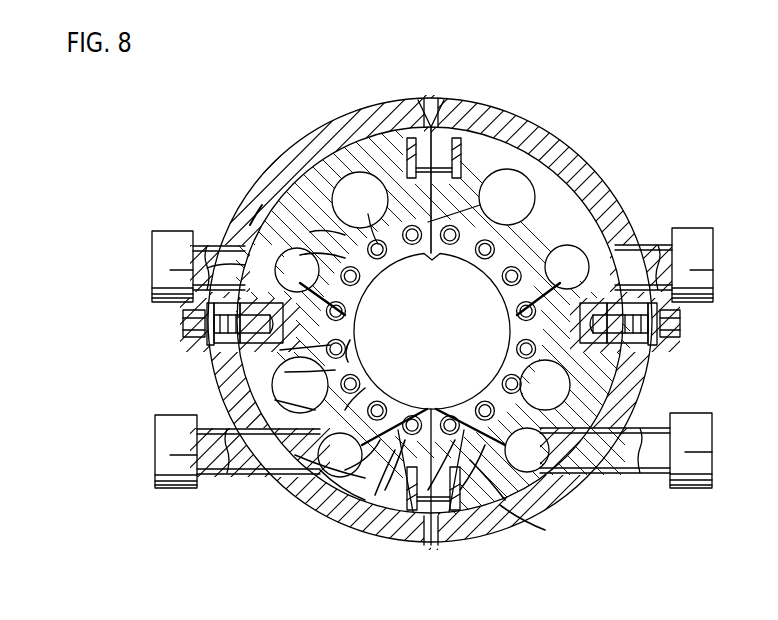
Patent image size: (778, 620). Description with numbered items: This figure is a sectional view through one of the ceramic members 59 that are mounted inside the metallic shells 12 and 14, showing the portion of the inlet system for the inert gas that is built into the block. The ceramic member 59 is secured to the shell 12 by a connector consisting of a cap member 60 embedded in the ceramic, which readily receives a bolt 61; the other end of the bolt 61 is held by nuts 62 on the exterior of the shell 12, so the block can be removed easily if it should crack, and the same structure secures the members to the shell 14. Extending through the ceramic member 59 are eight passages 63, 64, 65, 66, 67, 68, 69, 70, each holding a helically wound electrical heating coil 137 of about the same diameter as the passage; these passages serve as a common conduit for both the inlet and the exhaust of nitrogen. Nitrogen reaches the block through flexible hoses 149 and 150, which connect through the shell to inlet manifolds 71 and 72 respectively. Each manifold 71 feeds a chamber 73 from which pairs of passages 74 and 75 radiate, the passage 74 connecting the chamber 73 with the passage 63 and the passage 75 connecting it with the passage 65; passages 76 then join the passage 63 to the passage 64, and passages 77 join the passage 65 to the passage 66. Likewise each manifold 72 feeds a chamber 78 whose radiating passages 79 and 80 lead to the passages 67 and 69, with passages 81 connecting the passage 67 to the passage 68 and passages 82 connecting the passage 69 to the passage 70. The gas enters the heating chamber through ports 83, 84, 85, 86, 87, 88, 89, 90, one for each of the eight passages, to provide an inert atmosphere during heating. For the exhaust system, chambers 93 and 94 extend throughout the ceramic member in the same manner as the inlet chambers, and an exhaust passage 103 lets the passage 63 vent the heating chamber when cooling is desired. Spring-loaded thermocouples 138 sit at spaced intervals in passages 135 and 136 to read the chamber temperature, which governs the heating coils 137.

The metallic shell 12 is at (392, 98).
The metallic shell 14 is at (522, 118).
The ceramic member 59 is at (434, 128).
The cap member 60 is at (240, 345).
The bolt 61 is at (150, 330).
The nuts 62 is at (183, 335).
The passage 63 is at (500, 505).
The passage 64 is at (375, 495).
The passage 65 is at (350, 353).
The passage 66 is at (275, 400).
The passage 67 is at (280, 350).
The passage 68 is at (285, 215).
The passage 69 is at (360, 208).
The passage 70 is at (481, 197).
The inlet manifold 71 is at (295, 455).
The inlet manifold 72 is at (250, 272).
The chamber 73 is at (320, 470).
The passage 74 is at (428, 490).
The passage 75 is at (345, 470).
The passage 76 is at (460, 490).
The passage 77 is at (300, 385).
The chamber 78 is at (255, 235).
The passage 79 is at (190, 298).
The passage 80 is at (330, 225).
The passage 81 is at (352, 299).
The passage 82 is at (425, 225).
The port 83 is at (540, 490).
The port 84 is at (385, 490).
The port 85 is at (360, 382).
The port 86 is at (232, 480).
The port 87 is at (285, 372).
The port 88 is at (345, 248).
The port 89 is at (405, 232).
The port 90 is at (540, 235).
The chamber 93 is at (245, 420).
The chamber 94 is at (318, 180).
The exhaust passage 103 is at (431, 514).
The passage 135 is at (300, 455).
The passage 136 is at (330, 260).
The electrical heating coil 137 is at (505, 500).
The thermocouple 138 is at (290, 245).
The flexible hose 149 is at (178, 488).
The flexible hose 150 is at (245, 268).